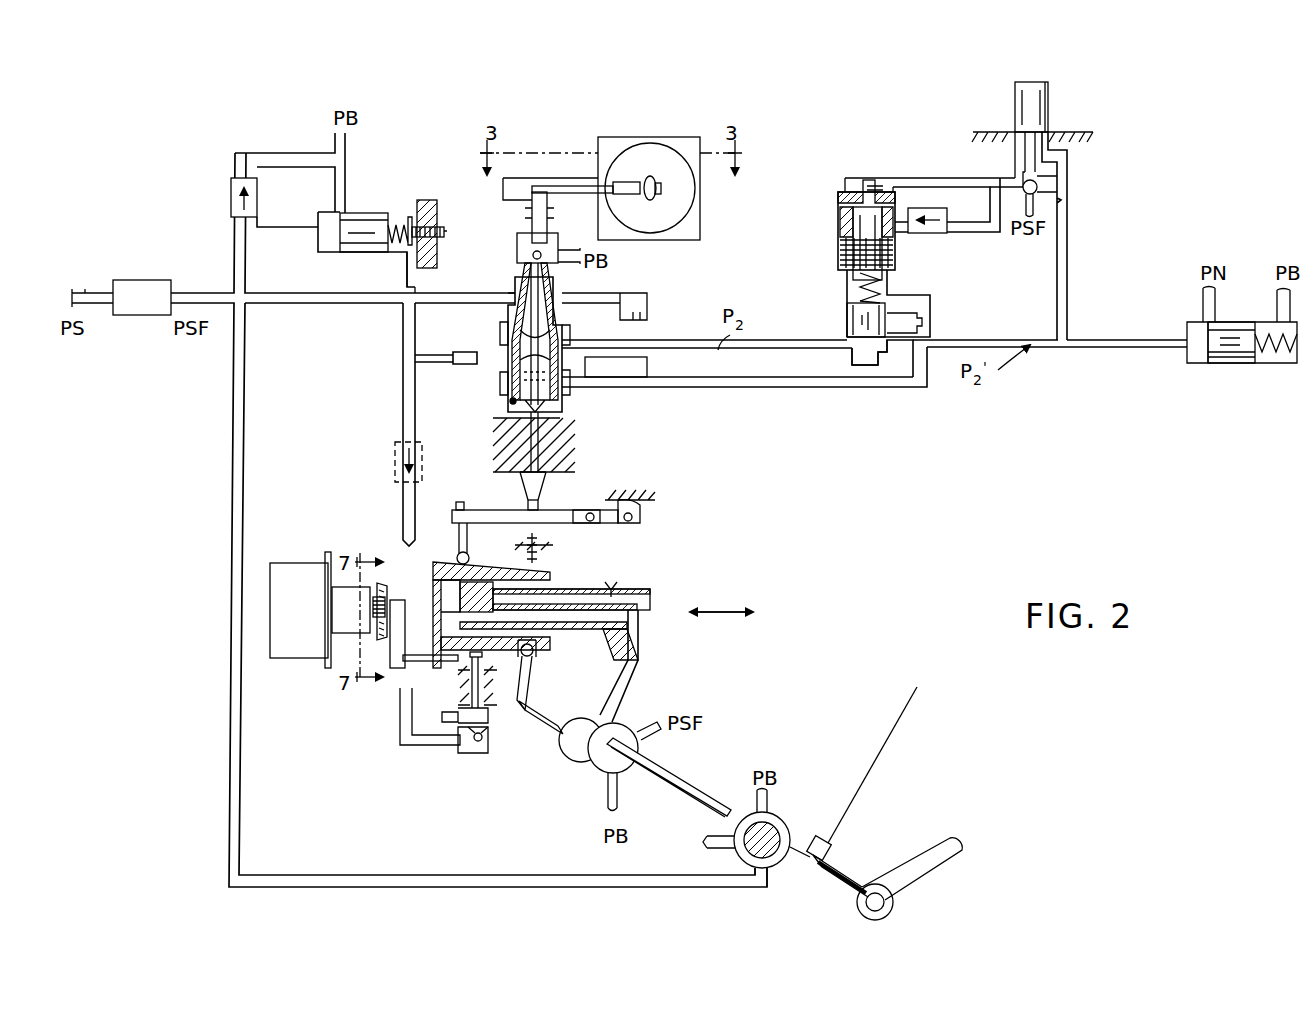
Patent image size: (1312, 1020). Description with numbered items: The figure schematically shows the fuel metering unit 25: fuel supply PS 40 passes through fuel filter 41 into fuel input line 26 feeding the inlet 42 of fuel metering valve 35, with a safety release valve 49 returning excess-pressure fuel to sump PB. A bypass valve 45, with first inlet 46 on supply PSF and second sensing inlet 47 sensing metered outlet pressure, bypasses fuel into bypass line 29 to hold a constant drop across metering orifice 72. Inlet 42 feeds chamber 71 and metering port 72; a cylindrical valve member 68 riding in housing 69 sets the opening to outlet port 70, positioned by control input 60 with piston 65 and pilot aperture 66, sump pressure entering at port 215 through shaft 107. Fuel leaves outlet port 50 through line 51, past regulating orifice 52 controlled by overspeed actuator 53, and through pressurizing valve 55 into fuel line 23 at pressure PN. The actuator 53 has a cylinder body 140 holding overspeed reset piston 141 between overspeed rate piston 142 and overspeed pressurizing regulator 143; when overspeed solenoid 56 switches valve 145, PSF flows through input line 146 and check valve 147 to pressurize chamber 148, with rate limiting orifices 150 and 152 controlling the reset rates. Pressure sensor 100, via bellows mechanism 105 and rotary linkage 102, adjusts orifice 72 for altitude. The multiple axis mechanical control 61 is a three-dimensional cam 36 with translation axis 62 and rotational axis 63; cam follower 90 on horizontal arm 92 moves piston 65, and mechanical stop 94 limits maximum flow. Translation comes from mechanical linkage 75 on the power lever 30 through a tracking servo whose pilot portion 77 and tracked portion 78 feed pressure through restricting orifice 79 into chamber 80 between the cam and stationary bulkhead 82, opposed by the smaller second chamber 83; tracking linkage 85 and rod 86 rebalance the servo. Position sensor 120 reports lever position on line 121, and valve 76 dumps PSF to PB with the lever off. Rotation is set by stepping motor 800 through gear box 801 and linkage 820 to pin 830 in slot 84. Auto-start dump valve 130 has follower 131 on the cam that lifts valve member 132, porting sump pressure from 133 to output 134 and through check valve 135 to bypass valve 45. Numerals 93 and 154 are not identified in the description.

The fuel line 23 is at (1203, 305).
The fuel metering unit 25 is at (703, 458).
The fuel input line 26 is at (207, 290).
The bypass line 29 is at (348, 160).
The power lever 30 is at (935, 870).
The fuel metering valve 35 is at (672, 266).
The three-dimensional cam 36 is at (443, 566).
The fuel supply 40 is at (96, 290).
The fuel filter 41 is at (140, 318).
The inlet 42 is at (460, 295).
The bypass valve 45 is at (365, 213).
The first inlet 46 is at (310, 250).
The second sensing inlet 47 is at (405, 283).
The safety release valve 49 is at (231, 195).
The outlet port 50 is at (572, 330).
The line 51 is at (762, 350).
The regulating orifice 52 is at (885, 370).
The overspeed actuator 53 is at (896, 270).
The pressurizing valve 55 is at (1250, 365).
The overspeed solenoid 56 is at (1050, 110).
The control input 60 is at (555, 440).
The multiple axis mechanical control 61 is at (648, 562).
The manual control axis 62 is at (722, 612).
The electrical control axis 63 is at (383, 580).
The mechanically displaceable piston 65 is at (545, 505).
The pilot aperture 66 is at (511, 405).
The cylindrical valve member 68 is at (500, 327).
The housing 69 is at (508, 287).
The outlet port 70 is at (615, 343).
The chamber 71 is at (517, 270).
The metering port 72 is at (503, 385).
The mechanical linkage 75 is at (722, 748).
The valve 76 is at (785, 820).
The pilot portion 77 is at (600, 780).
The tracked portion 78 is at (570, 770).
The restricting orifice 79 is at (640, 667).
The internal chamber 80 is at (445, 600).
The stationary bulkhead 82 is at (477, 578).
The second chamber 83 is at (520, 589).
The slot 84 is at (400, 700).
The tracking linkage 85 is at (533, 656).
The rod 86 is at (548, 715).
The cam follower 90 is at (458, 553).
The horizontal arm 92 is at (478, 505).
The pivot 93 is at (645, 520).
The mechanical stop 94 is at (540, 540).
The pressure sensor 100 is at (600, 135).
The rotary linkage 102 is at (532, 228).
The bellows mechanism 105 is at (688, 200).
The shaft 107 is at (532, 190).
The position sensor 120 is at (830, 850).
The line 121 is at (898, 712).
The valve member 130 is at (425, 765).
The follower 131 is at (500, 705).
The valve member 132 is at (478, 745).
The sump pressure connection 133 is at (458, 750).
The output 134 is at (400, 745).
The check valve 135 is at (395, 472).
The cylinder body 140 is at (840, 228).
The overspeed reset piston 141 is at (838, 215).
The overspeed rate piston 142 is at (845, 185).
The overspeed pressurizing regulator 143 is at (847, 325).
The valve 145 is at (1037, 180).
The input line 146 is at (1000, 182).
The check valve 147 is at (950, 232).
The chamber 148 is at (840, 262).
The rate limiting orifice 150 is at (905, 182).
The rate limiting orifice 152 is at (1068, 200).
The port 154 is at (925, 320).
The port 215 is at (545, 262).
The stepping motor 800 is at (292, 575).
The gear box 801 is at (325, 640).
The linkage 820 is at (395, 680).
The pin 830 is at (398, 690).